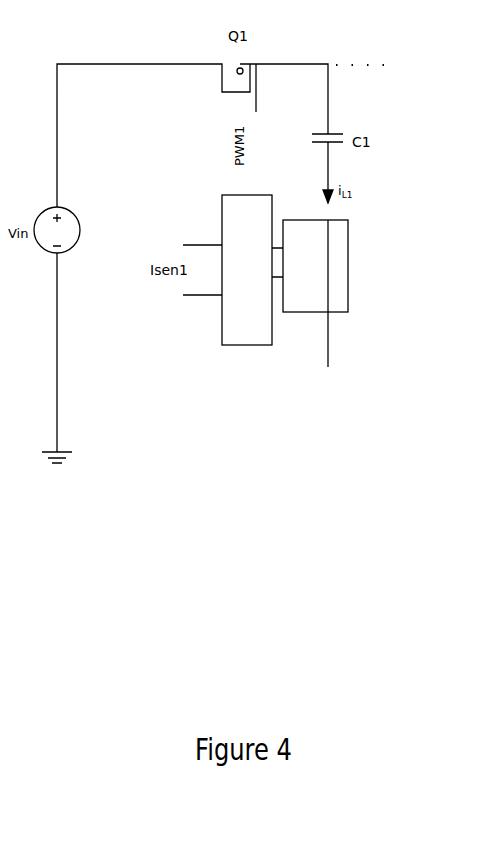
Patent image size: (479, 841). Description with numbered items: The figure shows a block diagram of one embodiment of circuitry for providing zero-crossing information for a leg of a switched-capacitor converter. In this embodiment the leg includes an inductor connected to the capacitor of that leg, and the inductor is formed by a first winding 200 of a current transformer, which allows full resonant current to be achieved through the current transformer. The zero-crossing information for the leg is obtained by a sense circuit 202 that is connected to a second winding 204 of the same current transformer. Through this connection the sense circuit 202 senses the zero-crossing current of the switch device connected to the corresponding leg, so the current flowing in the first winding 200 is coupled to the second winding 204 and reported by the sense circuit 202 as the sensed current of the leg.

The first winding 200 is at (337, 289).
The sense circuit 202 is at (222, 196).
The second winding 204 is at (296, 288).